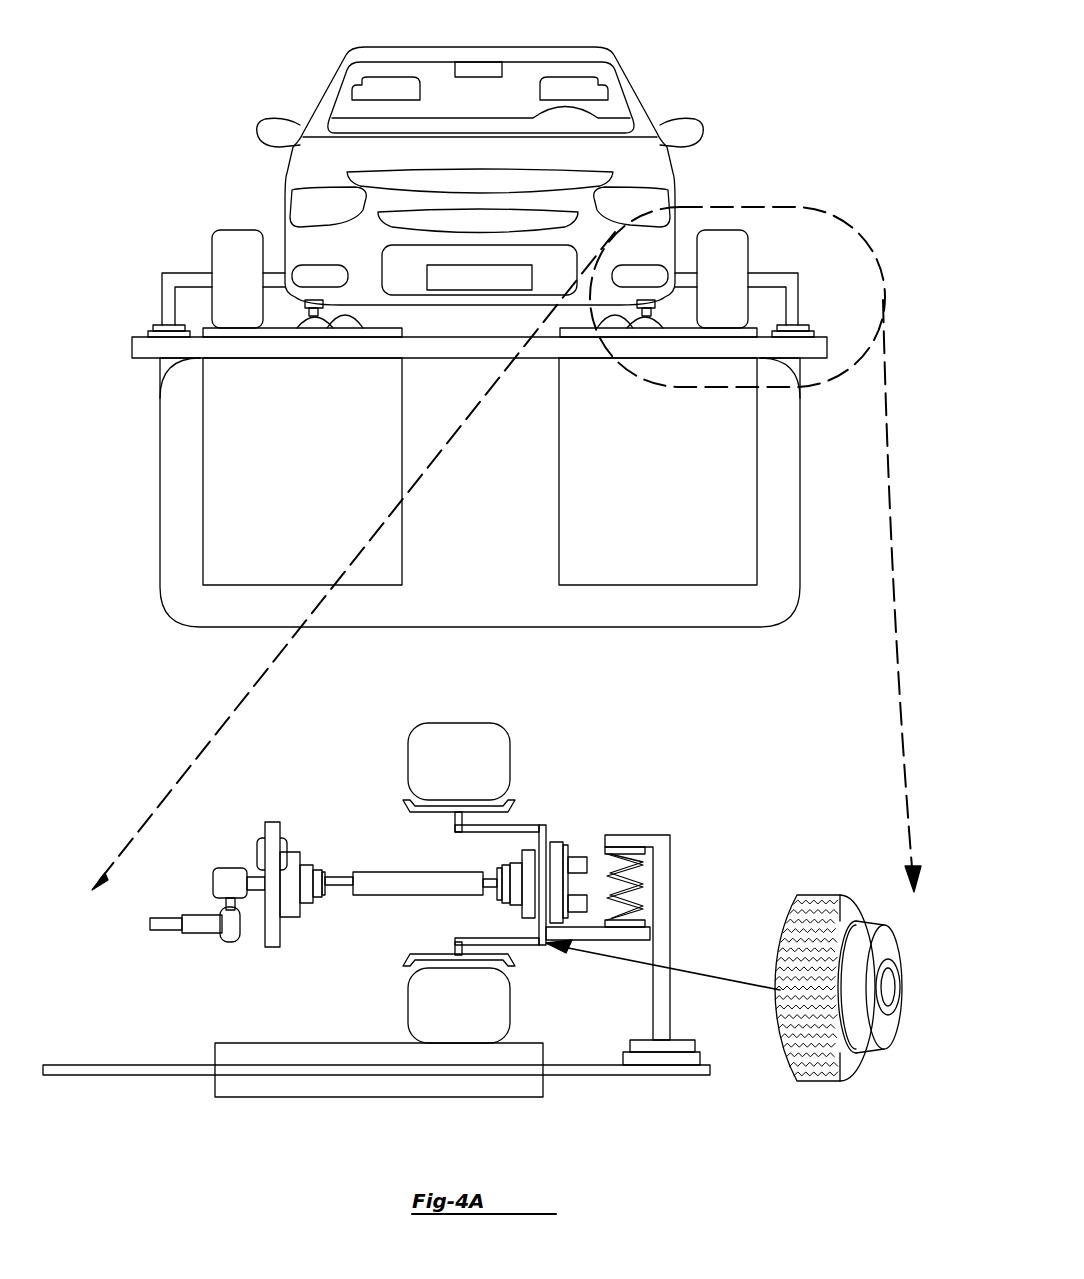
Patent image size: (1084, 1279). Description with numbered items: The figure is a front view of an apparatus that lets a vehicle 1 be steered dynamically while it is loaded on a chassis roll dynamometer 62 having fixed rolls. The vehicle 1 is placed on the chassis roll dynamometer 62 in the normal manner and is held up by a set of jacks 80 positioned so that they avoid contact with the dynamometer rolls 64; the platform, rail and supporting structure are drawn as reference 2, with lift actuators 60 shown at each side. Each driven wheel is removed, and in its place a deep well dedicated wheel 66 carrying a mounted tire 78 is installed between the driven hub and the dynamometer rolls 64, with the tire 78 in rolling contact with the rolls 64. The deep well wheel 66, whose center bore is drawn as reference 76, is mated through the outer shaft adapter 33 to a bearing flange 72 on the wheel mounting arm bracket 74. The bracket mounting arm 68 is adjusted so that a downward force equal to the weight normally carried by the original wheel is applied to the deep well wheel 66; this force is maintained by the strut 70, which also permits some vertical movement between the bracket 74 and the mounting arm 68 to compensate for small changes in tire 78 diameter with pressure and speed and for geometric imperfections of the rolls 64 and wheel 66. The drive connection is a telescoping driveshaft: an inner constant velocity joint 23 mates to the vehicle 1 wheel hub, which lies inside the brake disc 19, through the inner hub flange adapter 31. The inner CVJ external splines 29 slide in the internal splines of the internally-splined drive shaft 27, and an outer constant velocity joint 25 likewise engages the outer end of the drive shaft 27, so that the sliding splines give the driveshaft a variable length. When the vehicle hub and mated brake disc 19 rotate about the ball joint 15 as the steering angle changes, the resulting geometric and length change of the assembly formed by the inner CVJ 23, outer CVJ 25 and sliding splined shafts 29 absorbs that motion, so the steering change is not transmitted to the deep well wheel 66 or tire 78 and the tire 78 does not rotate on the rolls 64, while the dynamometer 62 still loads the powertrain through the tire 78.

The vehicle 1 is at (416, 52).
The test platform / rail 2 is at (150, 360).
The ball joint 15 is at (200, 925).
The brake disc 19 is at (273, 850).
The inner constant velocity joint 23 is at (308, 895).
The outer constant velocity joint 25 is at (505, 900).
The internally-splined drive shaft 27 is at (398, 885).
The inner CVJ external splines 29 is at (343, 880).
The inner hub flange adapter 31 is at (295, 858).
The outer shaft adapter 33 is at (530, 858).
The rim 60 is at (212, 252).
The chassis roll dynamometer 62 is at (800, 522).
The dynamometer rolls 64 is at (578, 515).
The deep well dedicated wheel 66 is at (566, 855).
The bracket mounting arm 68 is at (665, 865).
The strut 70 is at (610, 918).
The bearing flange 72 is at (567, 857).
The wheel mounting arm bracket 74 is at (640, 933).
The hub bore 76 is at (892, 968).
The tire 78 is at (510, 752).
The jacks 80 is at (327, 317).